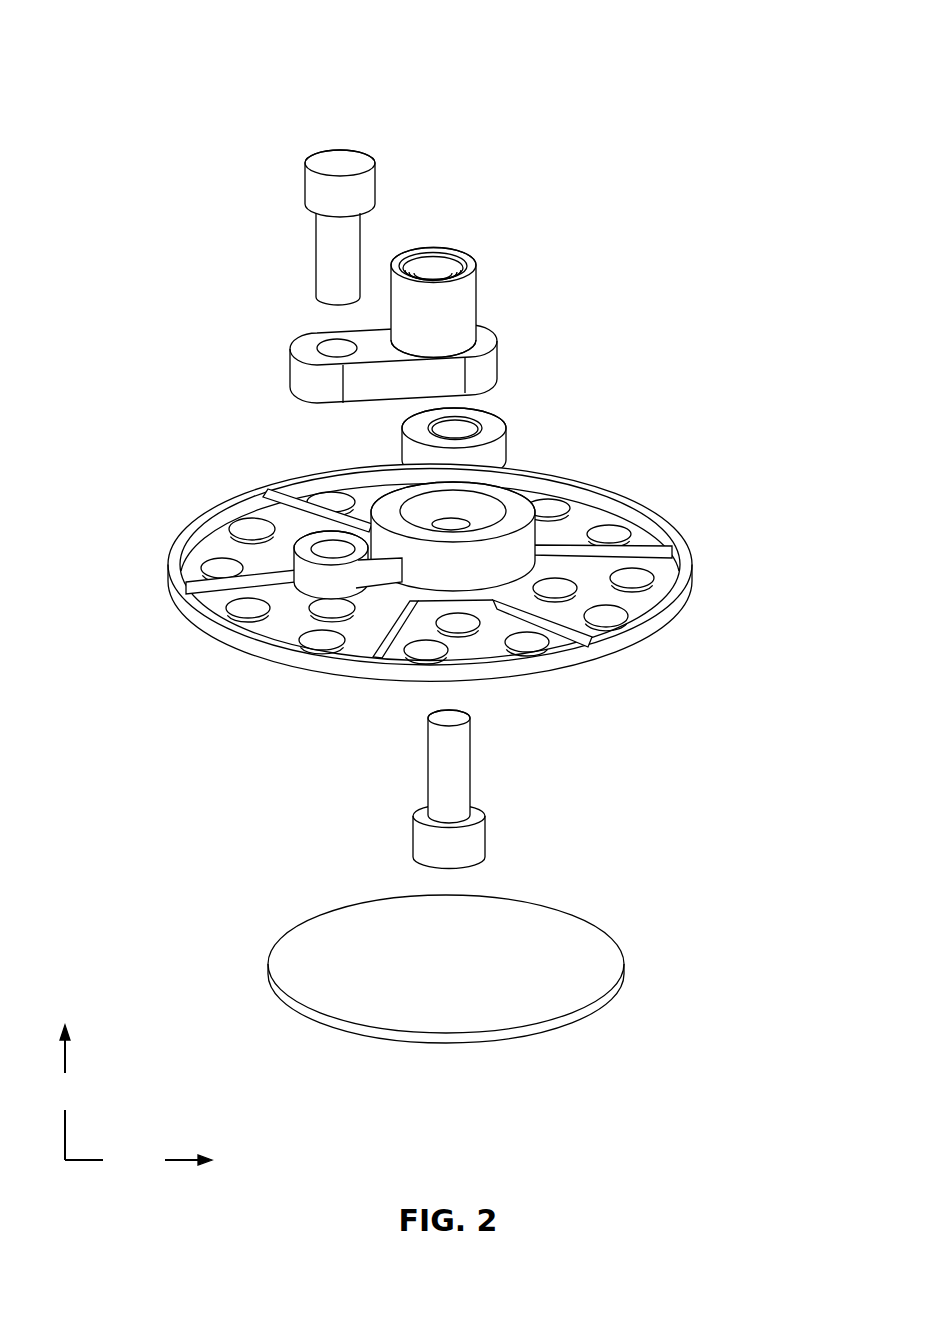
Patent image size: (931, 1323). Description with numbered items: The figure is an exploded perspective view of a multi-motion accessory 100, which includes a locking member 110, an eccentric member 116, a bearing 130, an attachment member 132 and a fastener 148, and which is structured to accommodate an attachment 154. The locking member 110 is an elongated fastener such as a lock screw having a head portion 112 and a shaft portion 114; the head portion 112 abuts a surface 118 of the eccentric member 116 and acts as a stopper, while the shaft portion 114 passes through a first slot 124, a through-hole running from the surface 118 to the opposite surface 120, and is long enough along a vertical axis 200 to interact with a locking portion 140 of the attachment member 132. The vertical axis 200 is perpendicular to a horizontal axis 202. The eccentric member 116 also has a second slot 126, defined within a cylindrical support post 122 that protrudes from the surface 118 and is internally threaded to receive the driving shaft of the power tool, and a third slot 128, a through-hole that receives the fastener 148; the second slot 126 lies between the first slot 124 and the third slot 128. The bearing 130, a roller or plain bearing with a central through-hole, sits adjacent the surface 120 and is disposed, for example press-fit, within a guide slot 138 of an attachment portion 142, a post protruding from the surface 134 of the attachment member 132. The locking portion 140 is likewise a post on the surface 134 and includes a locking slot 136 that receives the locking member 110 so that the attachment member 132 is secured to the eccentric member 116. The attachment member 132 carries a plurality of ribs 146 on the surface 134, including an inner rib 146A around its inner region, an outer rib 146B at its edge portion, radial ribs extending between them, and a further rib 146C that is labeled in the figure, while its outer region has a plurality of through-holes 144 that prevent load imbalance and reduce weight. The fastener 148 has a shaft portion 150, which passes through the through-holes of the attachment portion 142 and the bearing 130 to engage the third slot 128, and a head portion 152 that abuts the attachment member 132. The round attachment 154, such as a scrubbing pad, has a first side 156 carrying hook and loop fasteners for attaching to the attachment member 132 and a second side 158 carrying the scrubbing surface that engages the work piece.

The multi-motion accessory 100 is at (606, 99).
The locking member 110 is at (237, 127).
The head portion 112 is at (322, 192).
The shaft portion 114 is at (328, 270).
The eccentric member 116 is at (623, 228).
The surface 118 is at (372, 333).
The opposite surface 120 is at (343, 414).
The support post 122 is at (438, 332).
The first slot 124 is at (338, 350).
The second slot 126 is at (452, 252).
The third slot 128 is at (477, 337).
The bearing 130 is at (480, 458).
The attachment member 132 is at (744, 417).
The surface 134 is at (568, 523).
The locking slot 136 is at (330, 549).
The guide slot 138 is at (440, 508).
The locking portion 140 is at (320, 579).
The attachment portion 142 is at (420, 550).
The through-holes 144 is at (615, 538).
The ribs 146 is at (160, 672).
The inner rib 146A is at (387, 590).
The outer rib 146B is at (380, 607).
The third rib 146C is at (377, 632).
The fastener 148 is at (392, 713).
The shaft portion 150 is at (453, 775).
The head portion 152 is at (455, 850).
The attachment 154 is at (645, 895).
The first side 156 is at (512, 934).
The second side 158 is at (462, 1063).
The vertical axis 200 is at (63, 1092).
The horizontal axis 202 is at (138, 1159).